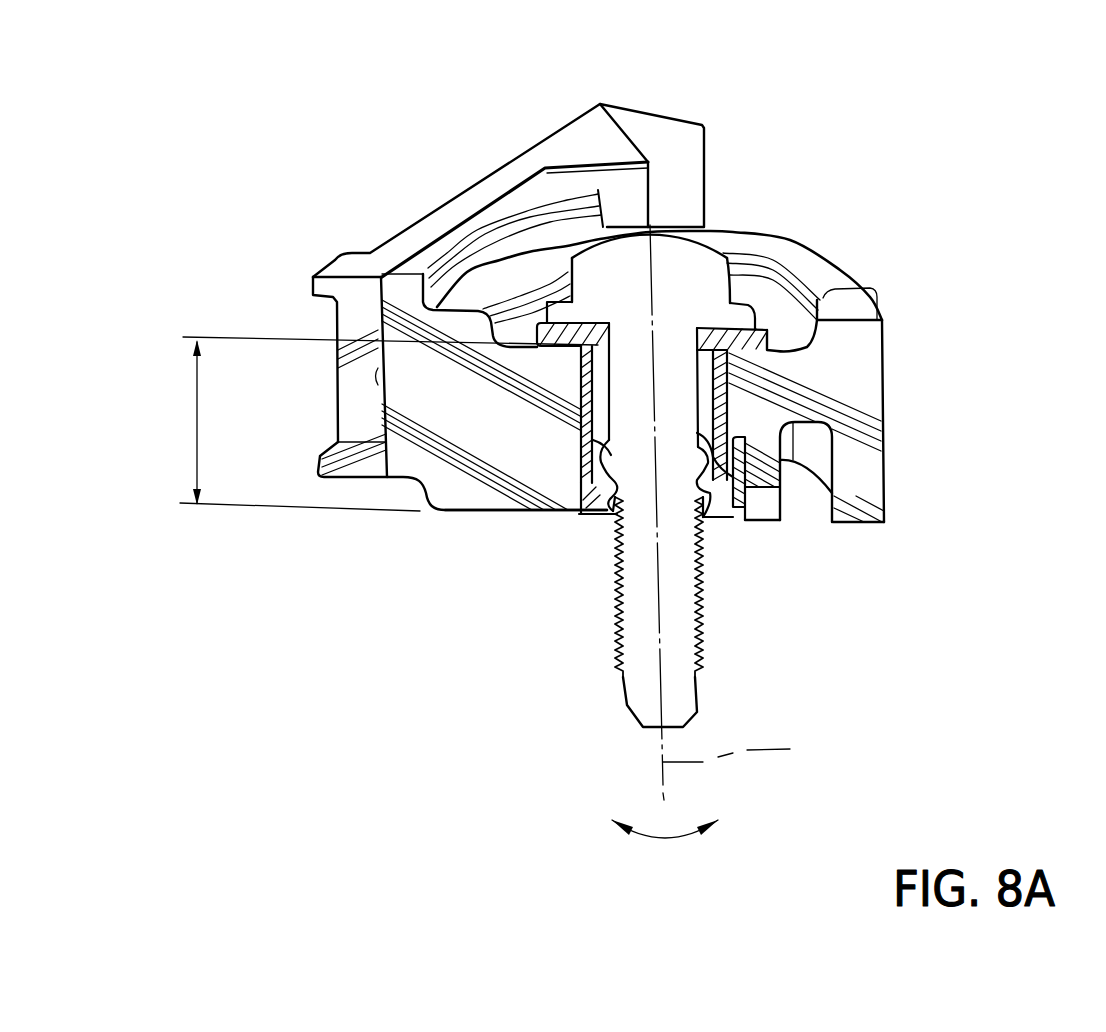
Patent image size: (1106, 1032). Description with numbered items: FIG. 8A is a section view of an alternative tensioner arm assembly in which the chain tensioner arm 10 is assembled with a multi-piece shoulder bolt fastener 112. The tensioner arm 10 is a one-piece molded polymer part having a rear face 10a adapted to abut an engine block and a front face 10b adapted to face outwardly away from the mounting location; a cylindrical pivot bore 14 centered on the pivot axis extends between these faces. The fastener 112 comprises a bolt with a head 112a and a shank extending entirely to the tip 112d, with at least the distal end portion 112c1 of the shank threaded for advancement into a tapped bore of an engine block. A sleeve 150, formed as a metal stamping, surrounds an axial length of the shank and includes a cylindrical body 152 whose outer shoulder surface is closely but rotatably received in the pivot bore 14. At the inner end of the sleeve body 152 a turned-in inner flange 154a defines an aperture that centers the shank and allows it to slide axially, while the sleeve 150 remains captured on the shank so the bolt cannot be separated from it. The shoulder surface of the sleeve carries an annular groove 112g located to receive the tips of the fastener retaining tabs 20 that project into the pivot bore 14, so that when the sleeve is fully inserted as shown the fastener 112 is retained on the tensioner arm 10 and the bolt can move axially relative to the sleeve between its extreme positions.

The chain tensioner arm 10 is at (870, 378).
The rear face 10a is at (458, 511).
The front face 10b is at (838, 290).
The pivot bore 14 is at (575, 466).
The fastener retaining tab 20 is at (781, 493).
The fastener 112 is at (596, 467).
The head 112a is at (693, 253).
The threaded end portion of the shank 112c1 is at (703, 662).
The tip 112d is at (627, 703).
The annular groove 112g is at (580, 487).
The sleeve 150 is at (763, 346).
The cylindrical body 152 is at (575, 383).
The inner flange 154a is at (712, 492).